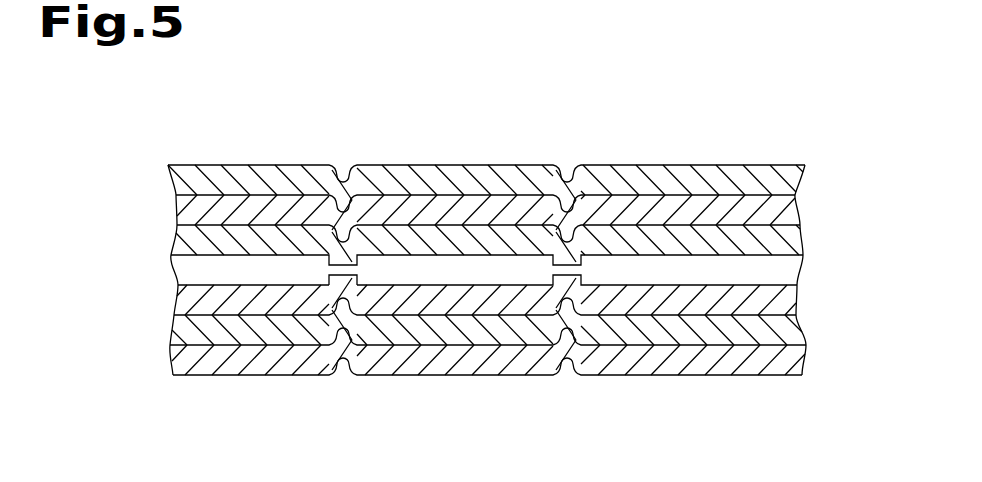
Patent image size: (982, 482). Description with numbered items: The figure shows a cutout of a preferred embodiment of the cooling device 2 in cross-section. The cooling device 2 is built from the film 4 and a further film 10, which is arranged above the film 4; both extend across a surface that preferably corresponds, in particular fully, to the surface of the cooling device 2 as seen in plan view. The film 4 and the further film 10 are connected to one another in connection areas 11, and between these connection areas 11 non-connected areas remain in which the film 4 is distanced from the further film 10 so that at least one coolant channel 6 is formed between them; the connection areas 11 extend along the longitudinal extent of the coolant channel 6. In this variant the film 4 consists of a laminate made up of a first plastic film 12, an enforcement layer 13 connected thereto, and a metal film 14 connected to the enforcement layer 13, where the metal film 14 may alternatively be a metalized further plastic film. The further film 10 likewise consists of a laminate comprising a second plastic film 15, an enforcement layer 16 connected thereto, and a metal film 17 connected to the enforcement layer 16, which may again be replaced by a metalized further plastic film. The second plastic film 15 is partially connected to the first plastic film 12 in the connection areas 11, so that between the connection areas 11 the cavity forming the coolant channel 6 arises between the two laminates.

The cooling device 2 is at (790, 148).
The film 4 is at (515, 360).
The coolant channel 6 is at (700, 268).
The further film 10 is at (625, 158).
The connection areas 11 is at (342, 275).
The first plastic film 12 is at (158, 299).
The enforcement layer 13 is at (818, 328).
The metal film 14 is at (158, 360).
The second plastic film 15 is at (158, 237).
The enforcement layer 16 is at (806, 207).
The metal film 17 is at (157, 178).